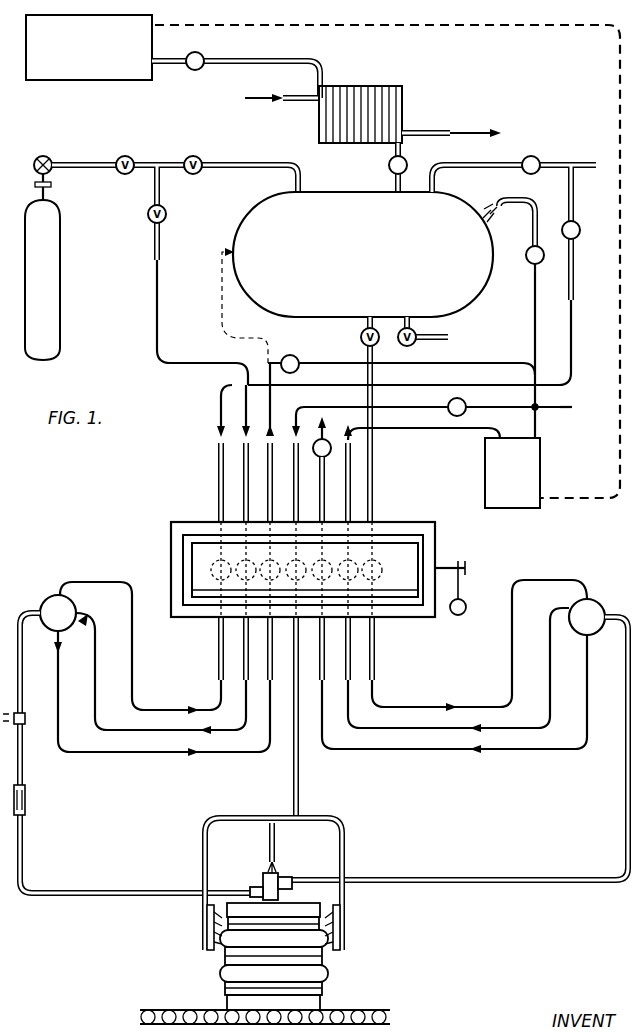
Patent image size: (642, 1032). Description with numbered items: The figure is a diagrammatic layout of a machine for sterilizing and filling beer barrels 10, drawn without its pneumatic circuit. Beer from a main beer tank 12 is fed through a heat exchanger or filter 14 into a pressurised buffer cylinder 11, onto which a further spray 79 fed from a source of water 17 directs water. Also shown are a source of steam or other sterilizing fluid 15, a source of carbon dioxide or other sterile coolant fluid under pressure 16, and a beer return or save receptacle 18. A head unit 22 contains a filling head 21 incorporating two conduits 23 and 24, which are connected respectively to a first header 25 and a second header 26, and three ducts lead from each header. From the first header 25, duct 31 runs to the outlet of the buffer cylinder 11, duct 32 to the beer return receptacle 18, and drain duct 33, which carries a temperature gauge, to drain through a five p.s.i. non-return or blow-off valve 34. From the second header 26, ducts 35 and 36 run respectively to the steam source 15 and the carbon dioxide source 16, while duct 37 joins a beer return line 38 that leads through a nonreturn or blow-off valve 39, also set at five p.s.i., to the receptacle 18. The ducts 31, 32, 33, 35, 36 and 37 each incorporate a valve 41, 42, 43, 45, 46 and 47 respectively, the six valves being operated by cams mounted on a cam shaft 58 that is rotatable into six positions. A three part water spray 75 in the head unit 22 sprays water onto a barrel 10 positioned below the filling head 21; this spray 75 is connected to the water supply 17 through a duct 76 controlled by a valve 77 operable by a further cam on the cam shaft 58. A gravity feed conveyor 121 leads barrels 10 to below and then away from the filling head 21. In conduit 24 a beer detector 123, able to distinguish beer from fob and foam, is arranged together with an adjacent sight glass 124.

The beer barrel 10 is at (322, 956).
The pressurised buffer cylinder 11 is at (334, 204).
The main beer tank 12 is at (165, 38).
The heat exchanger or filter 14 is at (385, 90).
The source of steam or other sterilizing fluid 15 is at (585, 166).
The source of carbon dioxide or other sterile coolant fluid under pressure 16 is at (52, 236).
The source of water 17 is at (572, 409).
The beer return or save receptacle 18 is at (542, 474).
The filling head 21 is at (281, 873).
The head unit 22 is at (339, 820).
The conduit 23 is at (432, 874).
The conduit 24 is at (97, 893).
The first header 25 is at (591, 614).
The second header 26 is at (70, 598).
The duct 31 is at (406, 711).
The duct 32 is at (352, 496).
The drain duct 33 is at (323, 470).
The non-return or blow-off valve 34 is at (328, 442).
The duct 35 is at (218, 448).
The duct 36 is at (243, 450).
The duct 37 is at (270, 465).
The beer return line 38 is at (348, 372).
The nonreturn or blow-off valve 39 is at (305, 352).
The valve 41 is at (367, 573).
The valve 42 is at (358, 595).
The valve 43 is at (328, 562).
The valve 45 is at (215, 576).
The valve 46 is at (240, 585).
The valve 47 is at (240, 536).
The cam shaft 58 is at (445, 562).
The three part water spray 75 is at (268, 862).
The duct 76 is at (292, 440).
The valve 77 is at (282, 592).
The further spray 79 is at (508, 206).
The gravity feed conveyor 121 is at (178, 1010).
The beer detector 123 is at (24, 723).
The sight glass 124 is at (26, 798).